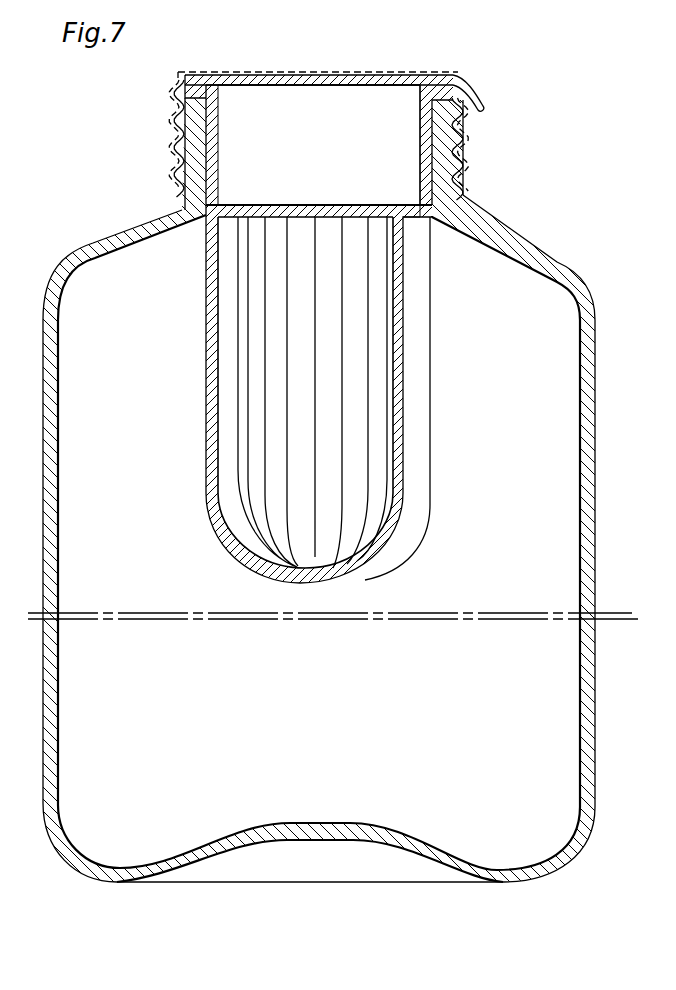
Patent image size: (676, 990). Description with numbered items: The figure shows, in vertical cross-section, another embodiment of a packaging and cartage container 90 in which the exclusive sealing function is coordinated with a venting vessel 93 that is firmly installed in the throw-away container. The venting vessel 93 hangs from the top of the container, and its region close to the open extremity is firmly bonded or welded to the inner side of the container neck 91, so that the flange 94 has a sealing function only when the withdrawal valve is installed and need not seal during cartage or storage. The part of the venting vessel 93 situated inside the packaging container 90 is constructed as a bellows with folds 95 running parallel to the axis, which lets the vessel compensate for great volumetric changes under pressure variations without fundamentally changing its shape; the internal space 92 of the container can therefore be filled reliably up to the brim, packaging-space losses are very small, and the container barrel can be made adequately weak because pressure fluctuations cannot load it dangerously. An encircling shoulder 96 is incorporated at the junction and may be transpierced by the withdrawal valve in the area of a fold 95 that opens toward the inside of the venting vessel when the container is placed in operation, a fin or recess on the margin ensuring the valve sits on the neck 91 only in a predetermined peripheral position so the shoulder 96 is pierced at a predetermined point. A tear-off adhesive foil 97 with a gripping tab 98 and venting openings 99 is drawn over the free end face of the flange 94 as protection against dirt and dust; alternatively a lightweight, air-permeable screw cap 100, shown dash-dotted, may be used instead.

The packaging container 90 is at (55, 253).
The container neck 91 is at (450, 160).
The internal space 92 is at (156, 598).
The venting vessel 93 is at (203, 394).
The flange 94 is at (200, 88).
The folds 95 is at (315, 383).
The encircling shoulder 96 is at (408, 202).
The tear-off adhesive foil 97 is at (265, 86).
The gripping tab 98 is at (475, 99).
The venting openings 99 is at (335, 76).
The screw cap 100 is at (432, 73).